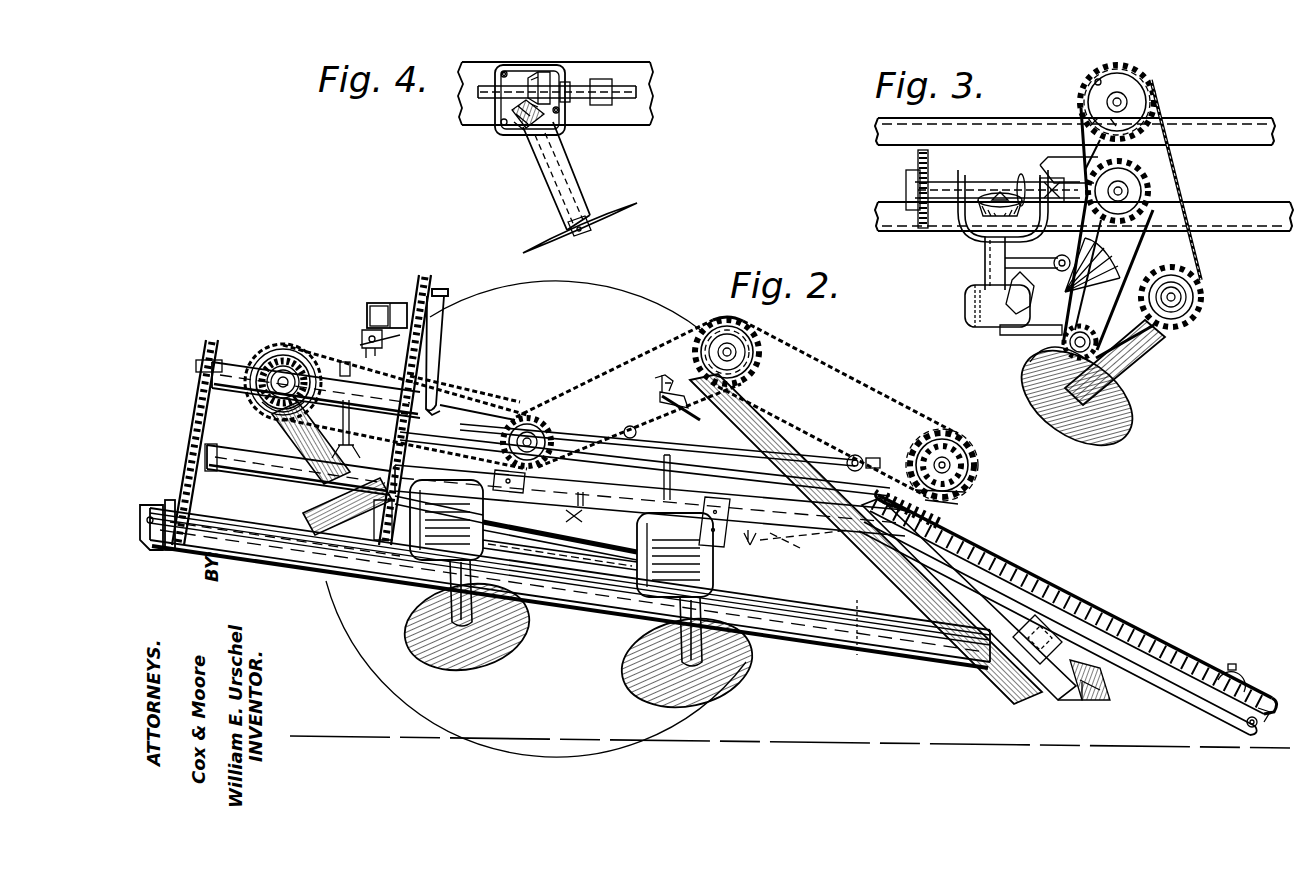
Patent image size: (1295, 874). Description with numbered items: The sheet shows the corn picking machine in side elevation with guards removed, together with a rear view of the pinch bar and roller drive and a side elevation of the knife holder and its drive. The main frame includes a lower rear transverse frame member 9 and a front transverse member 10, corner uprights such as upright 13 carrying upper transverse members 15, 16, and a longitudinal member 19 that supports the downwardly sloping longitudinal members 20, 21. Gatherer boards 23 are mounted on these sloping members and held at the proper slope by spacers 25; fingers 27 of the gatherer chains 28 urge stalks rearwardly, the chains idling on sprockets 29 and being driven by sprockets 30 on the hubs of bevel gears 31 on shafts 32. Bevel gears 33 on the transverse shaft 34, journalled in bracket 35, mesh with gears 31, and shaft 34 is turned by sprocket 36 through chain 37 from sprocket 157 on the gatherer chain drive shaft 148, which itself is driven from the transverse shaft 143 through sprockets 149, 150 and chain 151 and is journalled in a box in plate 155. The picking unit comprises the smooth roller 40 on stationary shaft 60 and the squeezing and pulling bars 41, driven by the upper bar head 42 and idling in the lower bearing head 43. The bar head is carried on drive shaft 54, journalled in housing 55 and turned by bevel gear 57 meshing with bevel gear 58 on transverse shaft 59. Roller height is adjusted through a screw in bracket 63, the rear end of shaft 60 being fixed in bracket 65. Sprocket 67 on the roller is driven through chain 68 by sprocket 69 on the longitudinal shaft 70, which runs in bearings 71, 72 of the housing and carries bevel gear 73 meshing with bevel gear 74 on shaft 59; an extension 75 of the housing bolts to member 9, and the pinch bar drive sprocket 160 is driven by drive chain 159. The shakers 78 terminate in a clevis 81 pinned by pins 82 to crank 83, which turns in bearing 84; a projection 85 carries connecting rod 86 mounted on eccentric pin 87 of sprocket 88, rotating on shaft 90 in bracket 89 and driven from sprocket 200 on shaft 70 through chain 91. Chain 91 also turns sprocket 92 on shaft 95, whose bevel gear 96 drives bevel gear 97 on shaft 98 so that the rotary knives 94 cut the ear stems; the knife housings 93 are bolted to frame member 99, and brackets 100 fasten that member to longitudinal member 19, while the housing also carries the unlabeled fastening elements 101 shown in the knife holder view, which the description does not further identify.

In FIG. 2, the lower rear transverse frame member 9 is at (358, 448).
In FIG. 2, the front transverse member 10 is at (660, 488).
In FIG. 2, the corner upright 13 is at (862, 667).
In FIG. 2, the upper transverse member 15 is at (362, 332).
In FIG. 2, the upper transverse member 16 is at (670, 400).
In FIG. 2, the longitudinal member 19 is at (812, 538).
In FIG. 2, the downwardly sloping longitudinal member 20 is at (968, 590).
In FIG. 2, the downwardly sloping longitudinal member 21 is at (985, 635).
In FIG. 2, the gatherer board 23 is at (1178, 692).
In FIG. 2, the block or spacer 25 is at (1036, 628).
In FIG. 2, the finger 27 is at (1250, 724).
In FIG. 2, the gatherer chain 28 is at (1140, 628).
In FIG. 2, the sprocket 29 is at (1236, 666).
In FIG. 2, the sprocket 30 is at (960, 530).
In FIG. 2, the bevel gear 31 is at (958, 500).
In FIG. 2, the shaft 32 is at (942, 512).
In FIG. 2, the bevel gear 33 is at (968, 490).
In FIG. 2, the transverse shaft 34 is at (956, 464).
In FIG. 2, the bracket 35 is at (978, 448).
In FIG. 2, the sprocket 36 is at (915, 436).
In FIG. 2, the chain 37 is at (882, 392).
In FIG. 2, the roller 40 is at (802, 630).
In FIG. 3, the squeezing and pulling bar 41 is at (1012, 332).
In FIG. 3, the upper bar head 42 is at (968, 310).
In FIG. 2, the upper bar head 42 is at (290, 548).
In FIG. 2, the lower bearing head 43 is at (1105, 676).
In FIG. 3, the drive shaft 54 is at (1000, 205).
In FIG. 3, the housing 55 is at (983, 282).
In FIG. 2, the housing 55 is at (262, 472).
In FIG. 3, the bevel gear 57 is at (985, 215).
In FIG. 3, the bevel gear 58 is at (1016, 178).
In FIG. 3, the transverse shaft 59 is at (972, 184).
In FIG. 2, the transverse shaft 59 is at (278, 416).
In FIG. 3, the stationary shaft 60 is at (1045, 385).
In FIG. 2, the stationary shaft 60 is at (365, 550).
In FIG. 2, the bracket 63 is at (1080, 690).
In FIG. 2, the bracket 65 is at (146, 506).
In FIG. 3, the sprocket 67 is at (1062, 350).
In FIG. 2, the sprocket 67 is at (170, 500).
In FIG. 3, the chain 68 is at (1135, 345).
In FIG. 2, the chain 68 is at (196, 412).
In FIG. 3, the sprocket 69 is at (1150, 150).
In FIG. 2, the sprocket 69 is at (203, 362).
In FIG. 3, the longitudinal shaft 70 is at (1132, 193).
In FIG. 2, the longitudinal shaft 70 is at (258, 406).
In FIG. 2, the bearing 71 is at (222, 390).
In FIG. 2, the bearing 72 is at (345, 366).
In FIG. 2, the bevel gear 73 is at (316, 356).
In FIG. 2, the bevel gear 74 is at (284, 368).
In FIG. 2, the extension 75 is at (300, 470).
In FIG. 3, the shaker 78 is at (1094, 282).
In FIG. 2, the shaker 78 is at (756, 562).
In FIG. 2, the clevis 81 is at (625, 430).
In FIG. 2, the pin 82 is at (850, 456).
In FIG. 3, the crank 83 is at (1070, 258).
In FIG. 2, the crank 83 is at (700, 442).
In FIG. 3, the bearing 84 is at (1020, 290).
In FIG. 2, the bearing 84 is at (222, 472).
In FIG. 3, the projection 85 is at (1046, 176).
In FIG. 2, the projection 85 is at (476, 398).
In FIG. 3, the connecting rod 86 is at (1075, 168).
In FIG. 2, the connecting rod 86 is at (432, 362).
In FIG. 3, the eccentric pin 87 is at (1094, 78).
In FIG. 2, the eccentric pin 87 is at (442, 292).
In FIG. 3, the sprocket 88 is at (1132, 84).
In FIG. 2, the sprocket 88 is at (400, 302).
In FIG. 3, the bracket 89 is at (1130, 103).
In FIG. 2, the bracket 89 is at (378, 303).
In FIG. 3, the shaft 90 is at (1110, 103).
In FIG. 3, the chain 91 is at (1132, 182).
In FIG. 2, the chain 91 is at (444, 342).
In FIG. 3, the sprocket 92 is at (1188, 312).
In FIG. 2, the sprocket 92 is at (378, 505).
In FIG. 4, the housing 93 is at (496, 108).
In FIG. 3, the housing 93 is at (1118, 372).
In FIG. 2, the housing 93 is at (410, 555).
In FIG. 4, the rotary knife 94 is at (548, 234).
In FIG. 3, the rotary knife 94 is at (1112, 414).
In FIG. 2, the rotary knife 94 is at (410, 636).
In FIG. 4, the shaft 95 is at (600, 86).
In FIG. 3, the shaft 95 is at (1190, 298).
In FIG. 2, the shaft 95 is at (562, 572).
In FIG. 4, the bevel gear 96 is at (544, 76).
In FIG. 4, the bevel gear 97 is at (518, 118).
In FIG. 4, the shaft 98 is at (556, 172).
In FIG. 4, the frame member 99 is at (645, 76).
In FIG. 2, the frame member 99 is at (638, 498).
In FIG. 2, the bracket 100 is at (738, 505).
In FIG. 4, the bolt 101 is at (506, 66).
In FIG. 2, the transverse shaft 143 is at (530, 500).
In FIG. 2, the gatherer chain drive shaft 148 is at (752, 364).
In FIG. 2, the sprocket 149 is at (527, 416).
In FIG. 2, the sprocket 150 is at (750, 386).
In FIG. 2, the chain 151 is at (582, 376).
In FIG. 2, the plate 155 is at (652, 384).
In FIG. 2, the sprocket 157 is at (700, 338).
In FIG. 2, the drive chain 159 is at (490, 400).
In FIG. 3, the pinch bar drive sprocket 160 is at (916, 155).
In FIG. 2, the pinch bar drive sprocket 160 is at (268, 356).
In FIG. 2, the sprocket 200 is at (405, 335).